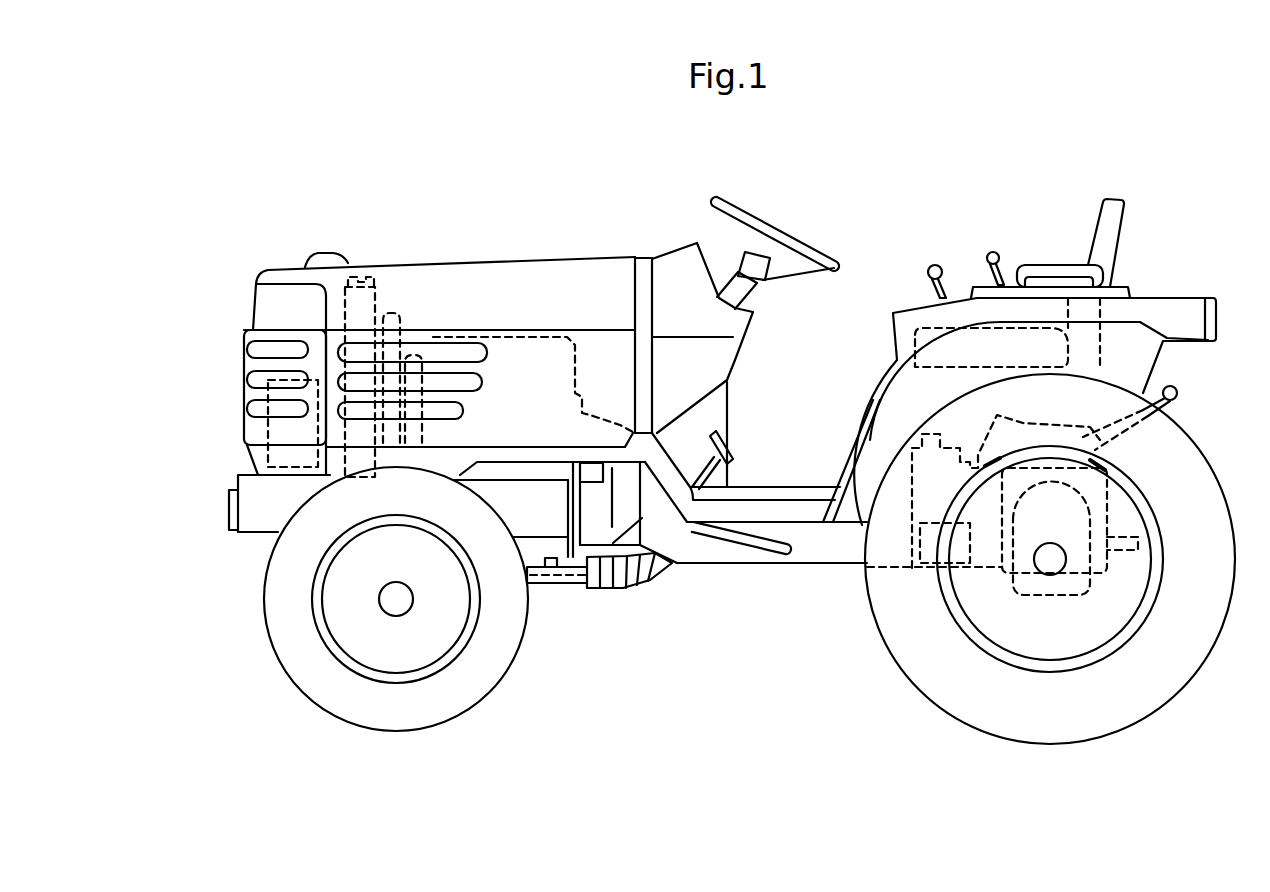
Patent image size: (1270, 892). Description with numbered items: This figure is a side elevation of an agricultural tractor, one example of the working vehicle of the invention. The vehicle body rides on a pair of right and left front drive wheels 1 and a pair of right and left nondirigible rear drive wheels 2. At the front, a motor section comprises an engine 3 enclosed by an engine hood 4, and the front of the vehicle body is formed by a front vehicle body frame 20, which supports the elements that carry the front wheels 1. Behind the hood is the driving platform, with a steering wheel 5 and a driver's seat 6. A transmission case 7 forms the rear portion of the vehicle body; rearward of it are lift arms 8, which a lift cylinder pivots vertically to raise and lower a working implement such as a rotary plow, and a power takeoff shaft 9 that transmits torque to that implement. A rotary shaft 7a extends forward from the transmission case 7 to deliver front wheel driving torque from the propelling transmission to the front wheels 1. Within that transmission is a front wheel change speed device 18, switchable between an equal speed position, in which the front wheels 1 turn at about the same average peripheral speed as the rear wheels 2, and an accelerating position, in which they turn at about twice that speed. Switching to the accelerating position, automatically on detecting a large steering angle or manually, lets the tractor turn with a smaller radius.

The front drive wheels 1 is at (287, 663).
The rear drive wheels 2 is at (1165, 695).
The engine 3 is at (503, 340).
The engine hood 4 is at (452, 262).
The steering wheel 5 is at (757, 218).
The driver's seat 6 is at (1088, 238).
The transmission case 7 is at (1052, 600).
The rotary shaft 7a is at (563, 580).
The lift arms 8 is at (1178, 393).
The power takeoff shaft 9 is at (1127, 530).
The front wheel change speed device 18 is at (920, 575).
The front vehicle body frame 20 is at (251, 527).